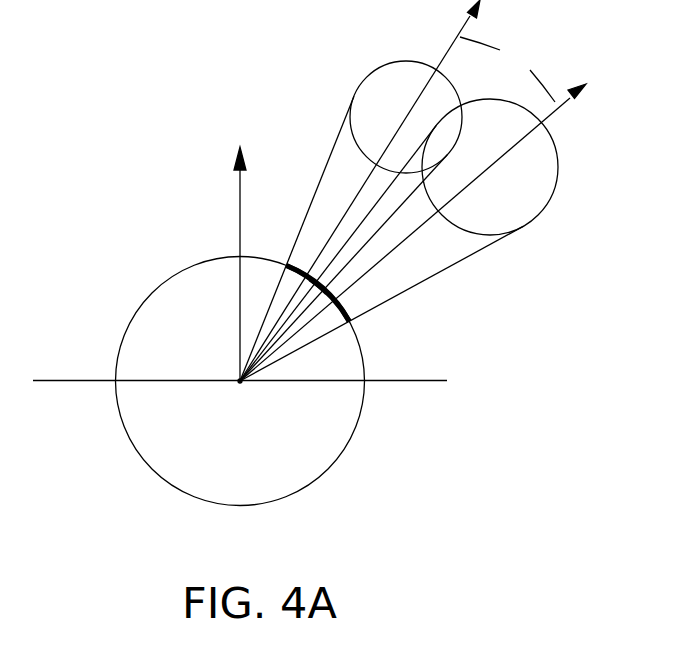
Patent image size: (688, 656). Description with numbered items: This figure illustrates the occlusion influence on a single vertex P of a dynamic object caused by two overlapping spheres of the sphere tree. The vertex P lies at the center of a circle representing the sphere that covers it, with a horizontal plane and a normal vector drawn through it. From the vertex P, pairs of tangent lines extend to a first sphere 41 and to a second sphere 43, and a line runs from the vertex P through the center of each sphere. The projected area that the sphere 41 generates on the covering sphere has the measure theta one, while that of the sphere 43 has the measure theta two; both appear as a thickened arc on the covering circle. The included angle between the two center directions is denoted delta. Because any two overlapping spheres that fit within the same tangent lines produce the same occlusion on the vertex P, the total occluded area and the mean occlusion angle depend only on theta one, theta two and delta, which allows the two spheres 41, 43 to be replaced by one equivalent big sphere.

The sphere 41 is at (400, 61).
The sphere 43 is at (557, 183).
The vertex P is at (229, 397).